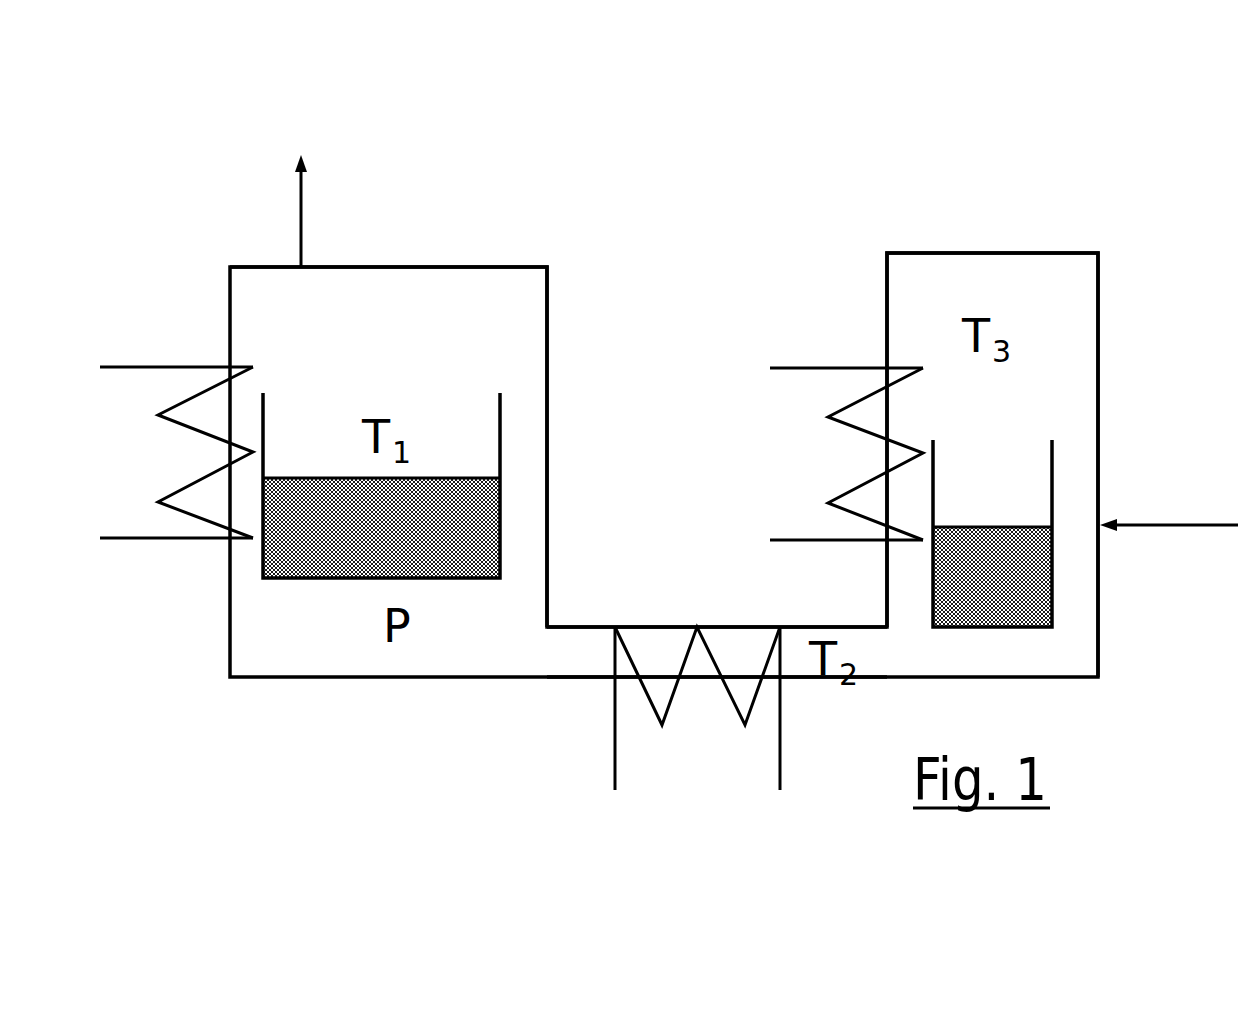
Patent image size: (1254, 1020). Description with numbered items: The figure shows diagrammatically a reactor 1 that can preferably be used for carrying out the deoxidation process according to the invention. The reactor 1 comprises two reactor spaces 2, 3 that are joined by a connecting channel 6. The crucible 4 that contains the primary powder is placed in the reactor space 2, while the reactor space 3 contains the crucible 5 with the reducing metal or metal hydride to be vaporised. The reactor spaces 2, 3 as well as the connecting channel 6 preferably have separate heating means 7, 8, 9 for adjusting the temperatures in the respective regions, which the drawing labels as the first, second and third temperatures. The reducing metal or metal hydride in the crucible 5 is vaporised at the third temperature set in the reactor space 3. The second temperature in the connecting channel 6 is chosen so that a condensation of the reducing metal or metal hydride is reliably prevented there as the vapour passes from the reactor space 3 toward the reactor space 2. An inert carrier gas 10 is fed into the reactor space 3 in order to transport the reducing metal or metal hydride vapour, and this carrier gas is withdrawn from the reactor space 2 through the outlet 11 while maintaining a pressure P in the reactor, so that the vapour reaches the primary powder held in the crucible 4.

The reactor 1 is at (735, 218).
The reactor space 2 is at (277, 348).
The reactor space 3 is at (1075, 328).
The crucible 4 is at (340, 578).
The crucible 5 is at (1023, 587).
The connecting channel 6 is at (583, 655).
The heating means 7 is at (187, 517).
The heating means 8 is at (863, 437).
The heating means 9 is at (733, 693).
The inert carrier gas 10 is at (1180, 515).
The gas outlet 11 is at (305, 238).